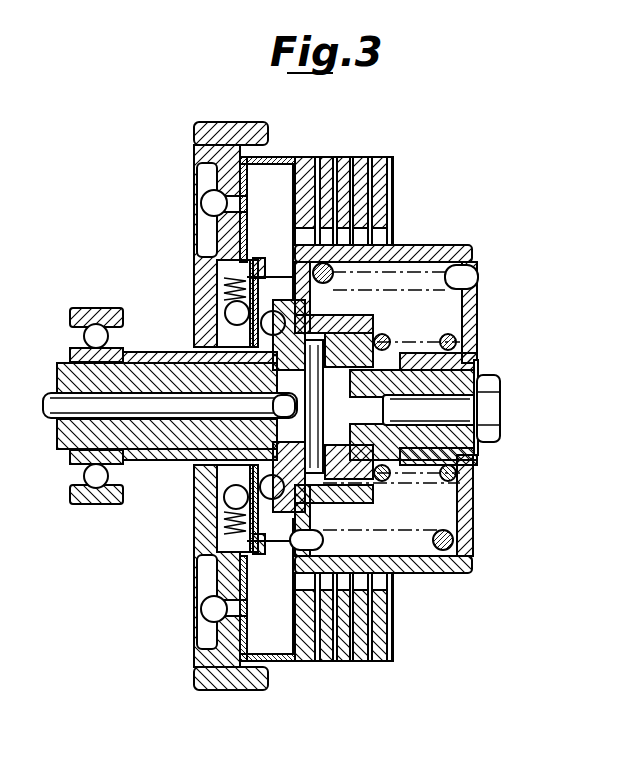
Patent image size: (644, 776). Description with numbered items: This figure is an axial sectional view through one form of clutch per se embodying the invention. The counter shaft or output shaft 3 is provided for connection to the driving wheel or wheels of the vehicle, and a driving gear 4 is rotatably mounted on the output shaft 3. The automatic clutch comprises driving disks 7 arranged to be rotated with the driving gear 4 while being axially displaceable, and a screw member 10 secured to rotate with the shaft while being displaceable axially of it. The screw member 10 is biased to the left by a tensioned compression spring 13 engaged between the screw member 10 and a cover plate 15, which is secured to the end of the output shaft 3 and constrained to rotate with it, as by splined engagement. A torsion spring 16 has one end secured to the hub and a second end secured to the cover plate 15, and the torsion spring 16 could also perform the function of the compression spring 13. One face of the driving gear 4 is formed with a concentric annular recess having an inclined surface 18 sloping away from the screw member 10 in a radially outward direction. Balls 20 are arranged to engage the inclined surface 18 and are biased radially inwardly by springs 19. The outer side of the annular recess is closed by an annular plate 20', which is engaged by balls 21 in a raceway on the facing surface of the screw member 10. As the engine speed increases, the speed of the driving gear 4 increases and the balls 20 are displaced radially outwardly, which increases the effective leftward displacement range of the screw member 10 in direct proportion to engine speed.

The output shaft 3 is at (160, 470).
The driving gear 4 is at (213, 131).
The driving disks 7 is at (346, 165).
The screw member 10 is at (357, 467).
The compression spring 13 is at (415, 338).
The cover plate 15 is at (464, 485).
The torsion spring 16 is at (418, 272).
The inclined surface 18 is at (227, 327).
The springs 19 is at (223, 280).
The balls 20 is at (162, 282).
The annular plate 20' is at (196, 525).
The balls 21 is at (272, 500).